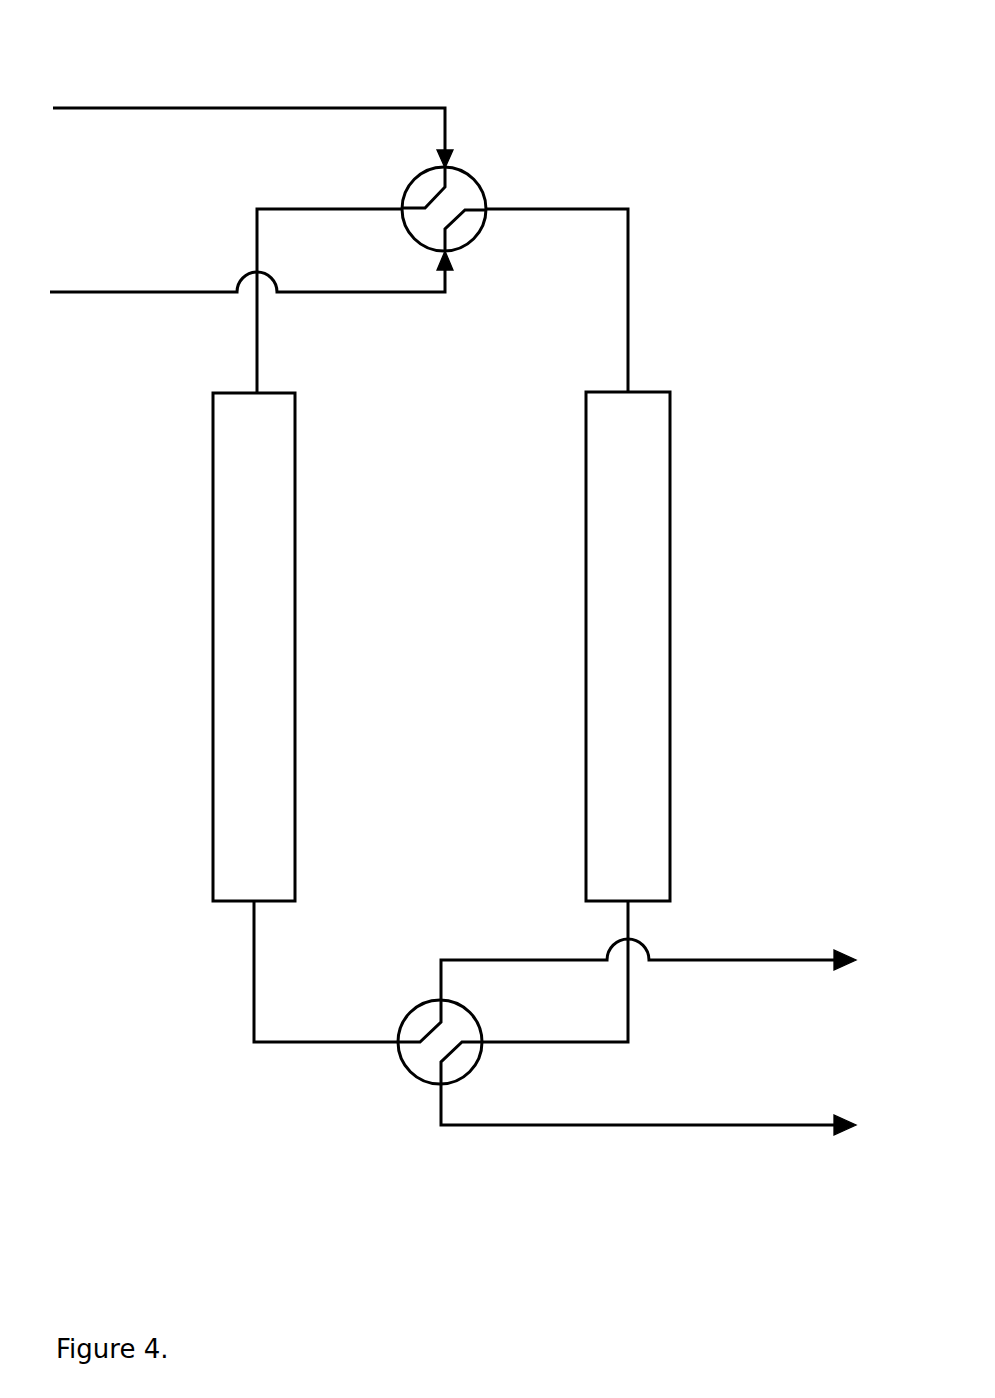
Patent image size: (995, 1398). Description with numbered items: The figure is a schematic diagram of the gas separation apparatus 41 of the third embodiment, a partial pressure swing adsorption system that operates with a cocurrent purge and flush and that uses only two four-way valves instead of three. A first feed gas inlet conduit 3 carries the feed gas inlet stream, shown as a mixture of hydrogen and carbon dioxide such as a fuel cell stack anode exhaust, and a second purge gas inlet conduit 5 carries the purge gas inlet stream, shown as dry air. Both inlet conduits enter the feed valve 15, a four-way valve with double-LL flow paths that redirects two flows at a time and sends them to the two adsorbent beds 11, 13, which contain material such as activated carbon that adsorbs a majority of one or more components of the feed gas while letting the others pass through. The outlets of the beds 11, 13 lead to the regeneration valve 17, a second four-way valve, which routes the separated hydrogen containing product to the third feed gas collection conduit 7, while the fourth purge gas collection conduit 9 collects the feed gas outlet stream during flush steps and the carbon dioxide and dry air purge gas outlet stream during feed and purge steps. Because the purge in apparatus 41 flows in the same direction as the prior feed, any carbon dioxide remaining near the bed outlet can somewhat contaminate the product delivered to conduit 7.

The apparatus 41 is at (632, 54).
The first feed gas inlet conduit 3 is at (317, 107).
The second purge gas inlet conduit 5 is at (167, 295).
The third feed gas collection conduit 7 is at (745, 962).
The fourth purge gas collection conduit 9 is at (663, 1127).
The adsorbent bed 11 is at (213, 608).
The adsorbent bed 13 is at (670, 546).
The feed valve 15 is at (477, 180).
The regeneration valve 17 is at (405, 1015).